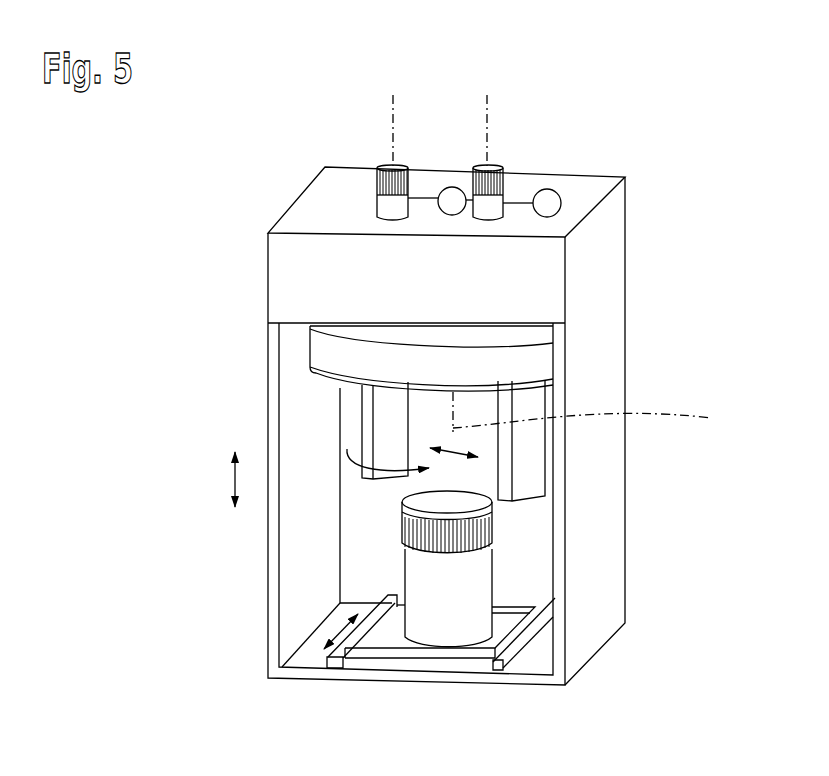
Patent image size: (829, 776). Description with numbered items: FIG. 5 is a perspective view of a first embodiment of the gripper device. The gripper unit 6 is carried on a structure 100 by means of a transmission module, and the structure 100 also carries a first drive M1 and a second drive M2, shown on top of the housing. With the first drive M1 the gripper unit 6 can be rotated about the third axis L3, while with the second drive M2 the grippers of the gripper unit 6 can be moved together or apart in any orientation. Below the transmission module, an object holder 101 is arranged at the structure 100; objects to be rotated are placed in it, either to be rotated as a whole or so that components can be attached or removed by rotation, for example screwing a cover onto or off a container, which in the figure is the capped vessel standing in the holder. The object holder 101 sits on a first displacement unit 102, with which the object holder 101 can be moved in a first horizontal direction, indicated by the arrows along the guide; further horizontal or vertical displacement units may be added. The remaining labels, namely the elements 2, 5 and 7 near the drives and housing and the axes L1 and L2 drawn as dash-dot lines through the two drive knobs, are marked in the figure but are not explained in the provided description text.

The dosing unit 2 is at (334, 157).
The housing 5 is at (241, 362).
The gripper unit 6 is at (309, 415).
The dosing head 7 is at (597, 161).
The structure 100 is at (443, 390).
The object holder 101 is at (502, 631).
The first displacement unit 102 is at (529, 655).
The first rotation axis L1 is at (391, 105).
The second rotation axis L2 is at (488, 105).
The third axis L3 is at (599, 413).
The first drive M1 is at (452, 187).
The second drive M2 is at (557, 190).